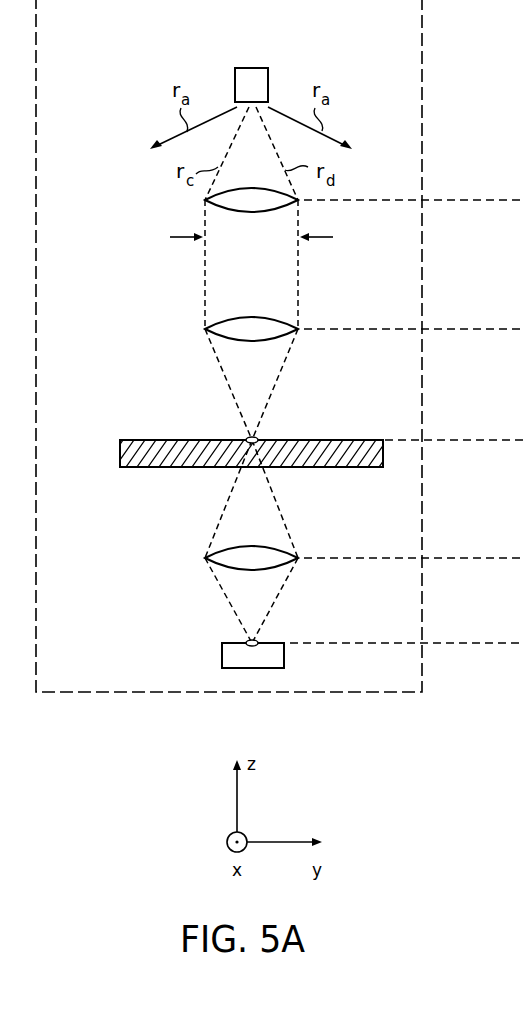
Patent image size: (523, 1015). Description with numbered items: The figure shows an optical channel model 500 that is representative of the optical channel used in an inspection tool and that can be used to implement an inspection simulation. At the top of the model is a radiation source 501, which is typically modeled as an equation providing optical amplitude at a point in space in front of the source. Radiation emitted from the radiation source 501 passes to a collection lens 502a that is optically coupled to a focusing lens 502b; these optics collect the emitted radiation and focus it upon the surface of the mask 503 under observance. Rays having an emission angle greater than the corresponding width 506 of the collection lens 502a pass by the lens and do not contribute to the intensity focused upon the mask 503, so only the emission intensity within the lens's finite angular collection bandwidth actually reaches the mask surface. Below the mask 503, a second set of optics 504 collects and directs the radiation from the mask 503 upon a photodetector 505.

The optical channel model 500 is at (83, 47).
The radiation source 501 is at (259, 76).
The collection lens 502a is at (255, 206).
The focusing lens 502b is at (257, 322).
The mask 503 is at (119, 447).
The second set of optics 504 is at (256, 552).
The photodetector 505 is at (221, 652).
The width of the collection lens 506 is at (271, 237).